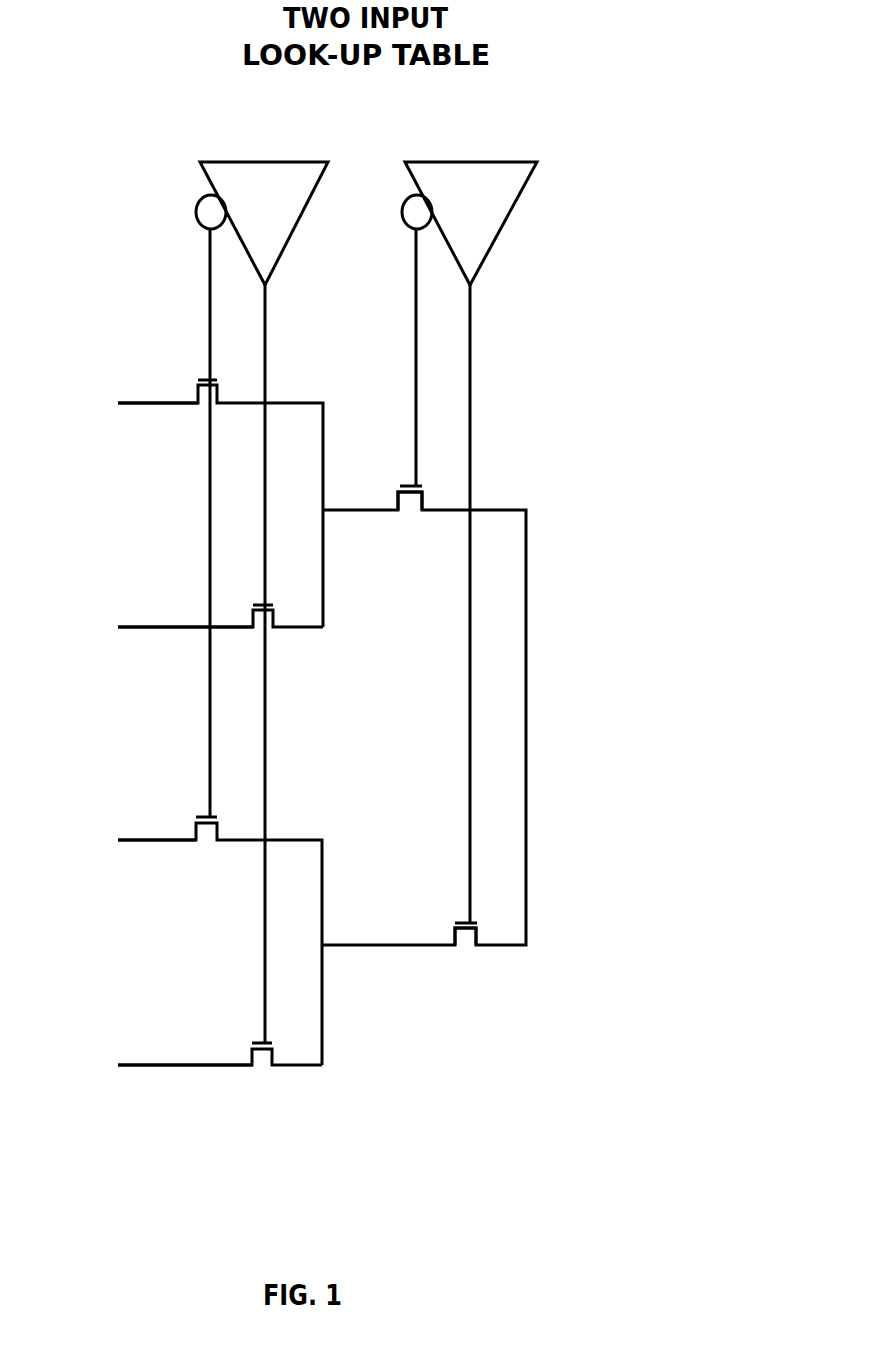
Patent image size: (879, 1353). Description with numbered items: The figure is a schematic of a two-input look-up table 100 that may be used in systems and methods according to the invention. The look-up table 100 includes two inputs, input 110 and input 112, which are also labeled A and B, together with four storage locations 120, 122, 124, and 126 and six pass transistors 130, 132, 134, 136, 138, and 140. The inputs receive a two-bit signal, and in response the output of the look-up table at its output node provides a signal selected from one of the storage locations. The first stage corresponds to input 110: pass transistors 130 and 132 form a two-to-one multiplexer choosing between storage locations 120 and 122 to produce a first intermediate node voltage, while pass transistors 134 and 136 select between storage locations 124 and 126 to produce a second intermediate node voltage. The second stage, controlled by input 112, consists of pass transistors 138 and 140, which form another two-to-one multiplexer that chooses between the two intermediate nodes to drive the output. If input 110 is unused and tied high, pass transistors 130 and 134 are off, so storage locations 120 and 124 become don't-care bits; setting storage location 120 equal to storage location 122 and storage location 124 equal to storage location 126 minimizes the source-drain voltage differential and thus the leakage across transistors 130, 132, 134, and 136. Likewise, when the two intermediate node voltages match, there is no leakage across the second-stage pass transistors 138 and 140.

The two-input look-up table 100 is at (335, 1145).
The input 110 is at (262, 584).
The input 112 is at (469, 524).
The storage location 120 is at (126, 413).
The storage location 122 is at (154, 633).
The storage location 124 is at (125, 844).
The storage location 126 is at (153, 1068).
The pass transistor 130 is at (220, 503).
The pass transistor 132 is at (223, 638).
The pass transistor 134 is at (220, 941).
The pass transistor 136 is at (220, 1074).
The pass transistor 138 is at (410, 522).
The pass transistor 140 is at (467, 958).